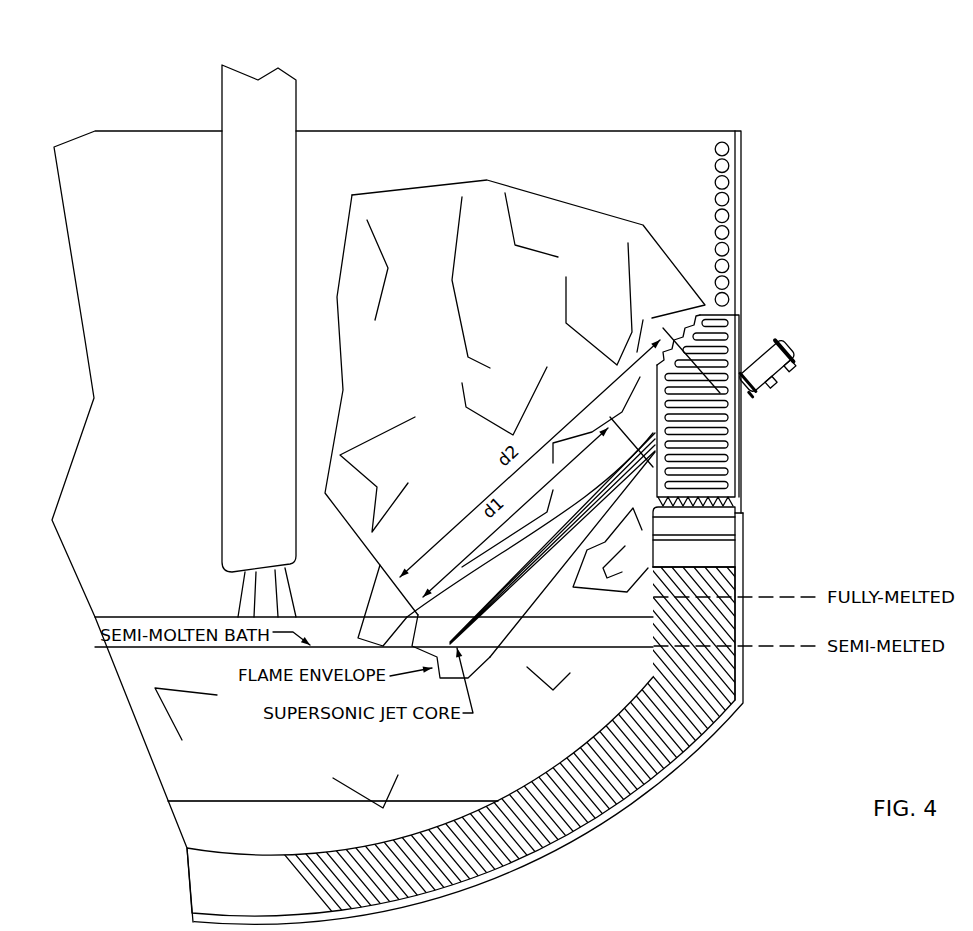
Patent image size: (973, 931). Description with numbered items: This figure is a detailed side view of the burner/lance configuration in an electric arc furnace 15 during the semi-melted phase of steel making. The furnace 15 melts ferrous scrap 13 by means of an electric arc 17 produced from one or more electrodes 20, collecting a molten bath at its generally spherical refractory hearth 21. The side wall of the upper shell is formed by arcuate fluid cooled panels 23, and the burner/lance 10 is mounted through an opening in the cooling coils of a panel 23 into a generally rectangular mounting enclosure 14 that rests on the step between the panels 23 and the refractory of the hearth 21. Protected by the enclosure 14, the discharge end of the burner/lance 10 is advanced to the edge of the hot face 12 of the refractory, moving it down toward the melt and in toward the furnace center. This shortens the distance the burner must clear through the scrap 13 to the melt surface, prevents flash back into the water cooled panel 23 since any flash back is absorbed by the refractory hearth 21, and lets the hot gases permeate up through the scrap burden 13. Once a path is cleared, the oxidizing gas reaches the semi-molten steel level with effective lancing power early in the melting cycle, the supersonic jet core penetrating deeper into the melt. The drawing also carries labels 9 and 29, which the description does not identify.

The slag layer 9 is at (373, 547).
The burner/lance 10 is at (770, 327).
The hot face of the refractory 12 is at (652, 628).
The ferrous scrap 13 is at (391, 205).
The mounting enclosure 14 is at (707, 423).
The electric arc furnace 15 is at (800, 183).
The electric arc 17 is at (292, 582).
The electrode 20 is at (283, 263).
The hearth 21 is at (660, 757).
The fluid cooled panel 23 is at (730, 235).
The metal bath 29 is at (208, 807).